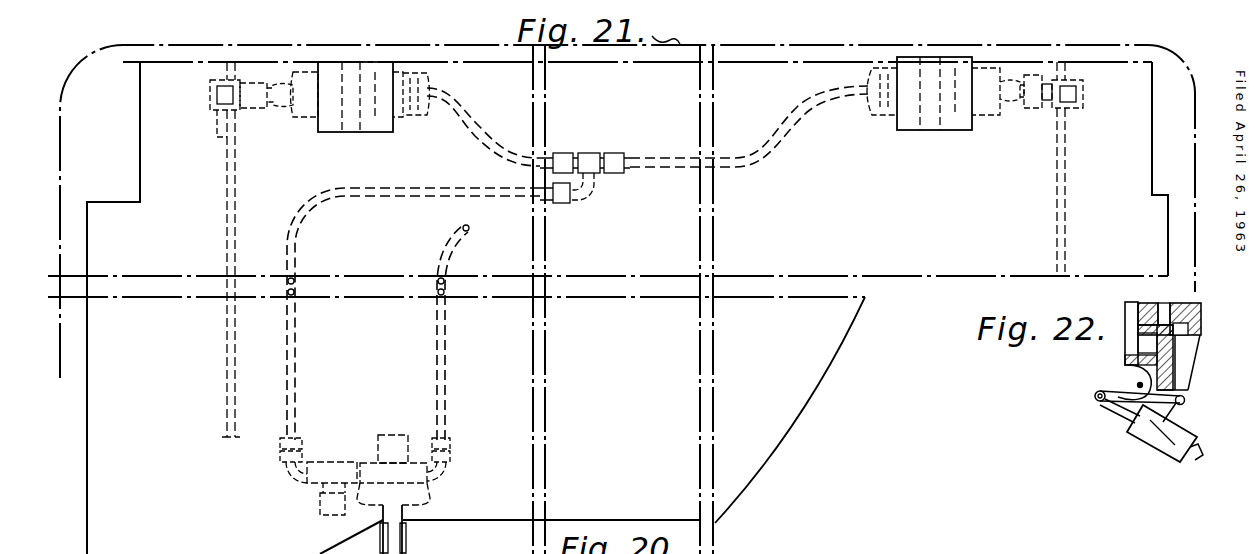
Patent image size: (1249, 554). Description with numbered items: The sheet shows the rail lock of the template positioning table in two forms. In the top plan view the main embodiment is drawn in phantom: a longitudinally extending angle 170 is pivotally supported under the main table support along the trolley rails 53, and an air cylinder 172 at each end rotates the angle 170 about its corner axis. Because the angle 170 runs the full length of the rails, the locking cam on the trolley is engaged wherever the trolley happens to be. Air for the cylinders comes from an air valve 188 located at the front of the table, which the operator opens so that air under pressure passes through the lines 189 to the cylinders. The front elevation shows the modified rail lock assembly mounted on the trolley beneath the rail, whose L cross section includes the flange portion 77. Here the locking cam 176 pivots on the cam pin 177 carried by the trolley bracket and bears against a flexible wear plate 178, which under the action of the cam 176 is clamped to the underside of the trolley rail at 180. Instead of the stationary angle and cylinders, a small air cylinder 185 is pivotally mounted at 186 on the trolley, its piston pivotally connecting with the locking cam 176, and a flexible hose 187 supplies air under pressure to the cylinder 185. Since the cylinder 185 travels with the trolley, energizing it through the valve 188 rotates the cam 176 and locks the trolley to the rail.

In FIG. 21, the longitudinally extending angle 170 is at (237, 171).
In FIG. 21, the air cylinder 172 is at (340, 133).
In FIG. 21, the lines 189 is at (479, 123).
In FIG. 21, the air valve 188 is at (423, 496).
In FIG. 22, the flexible wear plate 178 is at (1125, 345).
In FIG. 22, the trolley rails 53 is at (1150, 294).
In FIG. 22, the flange portion 77 is at (1170, 308).
In FIG. 22, the underside of the trolley rail 180 is at (1128, 360).
In FIG. 22, the cam pin 177 is at (1142, 366).
In FIG. 22, the locking cam 176 is at (1097, 391).
In FIG. 22, the pivotal mounting 186 is at (1138, 430).
In FIG. 22, the small air cylinder 185 is at (1168, 447).
In FIG. 22, the flexible hose 187 is at (1195, 458).